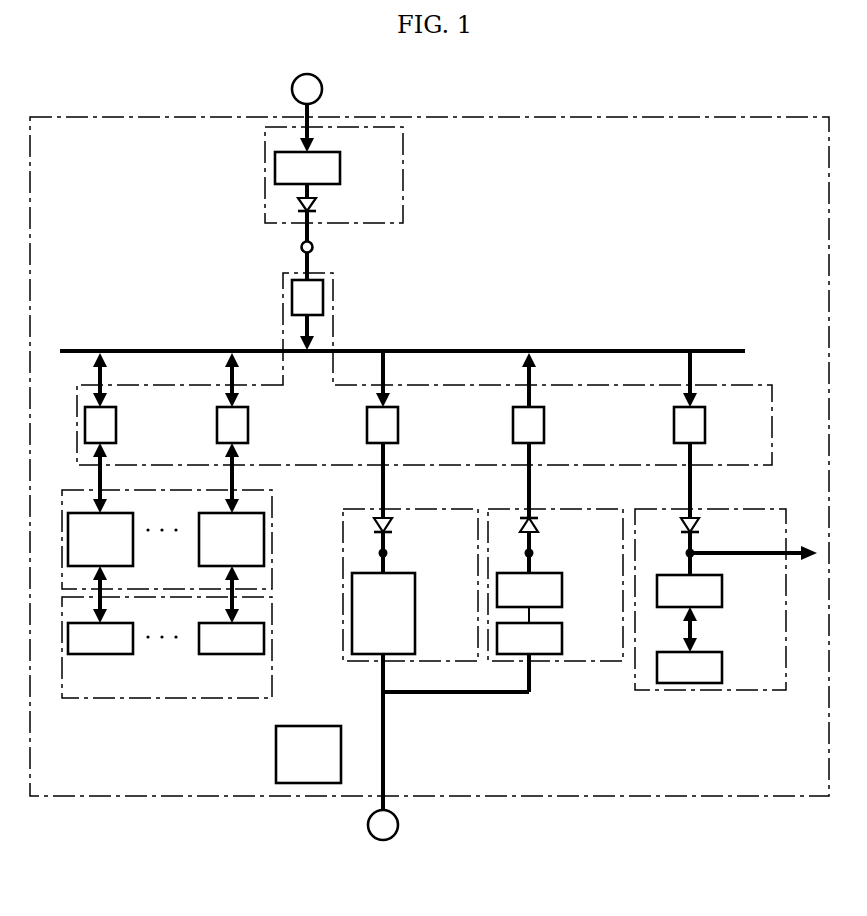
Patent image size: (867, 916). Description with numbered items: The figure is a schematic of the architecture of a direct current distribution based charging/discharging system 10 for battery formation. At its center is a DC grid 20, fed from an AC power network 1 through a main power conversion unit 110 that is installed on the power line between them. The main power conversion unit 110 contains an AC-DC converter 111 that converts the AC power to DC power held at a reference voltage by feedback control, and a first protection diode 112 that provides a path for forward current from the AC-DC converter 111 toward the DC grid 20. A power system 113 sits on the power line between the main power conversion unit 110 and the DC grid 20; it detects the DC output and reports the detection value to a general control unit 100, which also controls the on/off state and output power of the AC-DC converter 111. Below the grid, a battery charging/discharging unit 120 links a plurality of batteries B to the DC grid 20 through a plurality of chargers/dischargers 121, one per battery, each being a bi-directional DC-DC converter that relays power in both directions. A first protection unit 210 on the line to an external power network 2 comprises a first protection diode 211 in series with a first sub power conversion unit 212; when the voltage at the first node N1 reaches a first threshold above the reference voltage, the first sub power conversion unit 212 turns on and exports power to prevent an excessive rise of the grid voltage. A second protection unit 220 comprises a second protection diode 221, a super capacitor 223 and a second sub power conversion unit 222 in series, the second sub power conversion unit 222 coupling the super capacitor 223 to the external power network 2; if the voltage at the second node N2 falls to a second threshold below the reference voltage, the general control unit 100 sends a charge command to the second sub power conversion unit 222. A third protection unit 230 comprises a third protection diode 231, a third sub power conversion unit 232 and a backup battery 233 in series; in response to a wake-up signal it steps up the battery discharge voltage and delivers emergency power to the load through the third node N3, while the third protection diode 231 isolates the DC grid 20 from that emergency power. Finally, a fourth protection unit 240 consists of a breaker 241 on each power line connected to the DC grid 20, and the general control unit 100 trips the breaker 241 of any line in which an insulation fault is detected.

The AC power network 1 is at (322, 90).
The external power network 2 is at (398, 826).
The charging/discharging system 10 is at (125, 117).
The DC grid 20 is at (76, 350).
The general control unit 100 is at (320, 726).
The main power conversion unit 110 is at (403, 143).
The AC-DC converter 111 is at (340, 170).
The first protection diode 112 is at (316, 204).
The power system 113 is at (313, 247).
The battery charging/discharging unit 120 is at (272, 505).
The charger/discharger 121 is at (133, 553).
The battery B is at (114, 655).
The first protection unit 210 is at (453, 509).
The first protection diode 211 is at (391, 523).
The first sub power conversion unit 212 is at (415, 614).
The first node N1 is at (388, 554).
The second protection unit 220 is at (599, 509).
The second protection diode 221 is at (537, 523).
The second sub power conversion unit 222 is at (562, 639).
The super capacitor 223 is at (562, 589).
The second node N2 is at (534, 554).
The third protection unit 230 is at (763, 509).
The third protection diode 231 is at (698, 523).
The third sub power conversion unit 232 is at (722, 589).
The backup battery 233 is at (722, 669).
The third node N3 is at (685, 554).
The fourth protection unit 240 is at (282, 282).
The breaker 241 is at (323, 298).